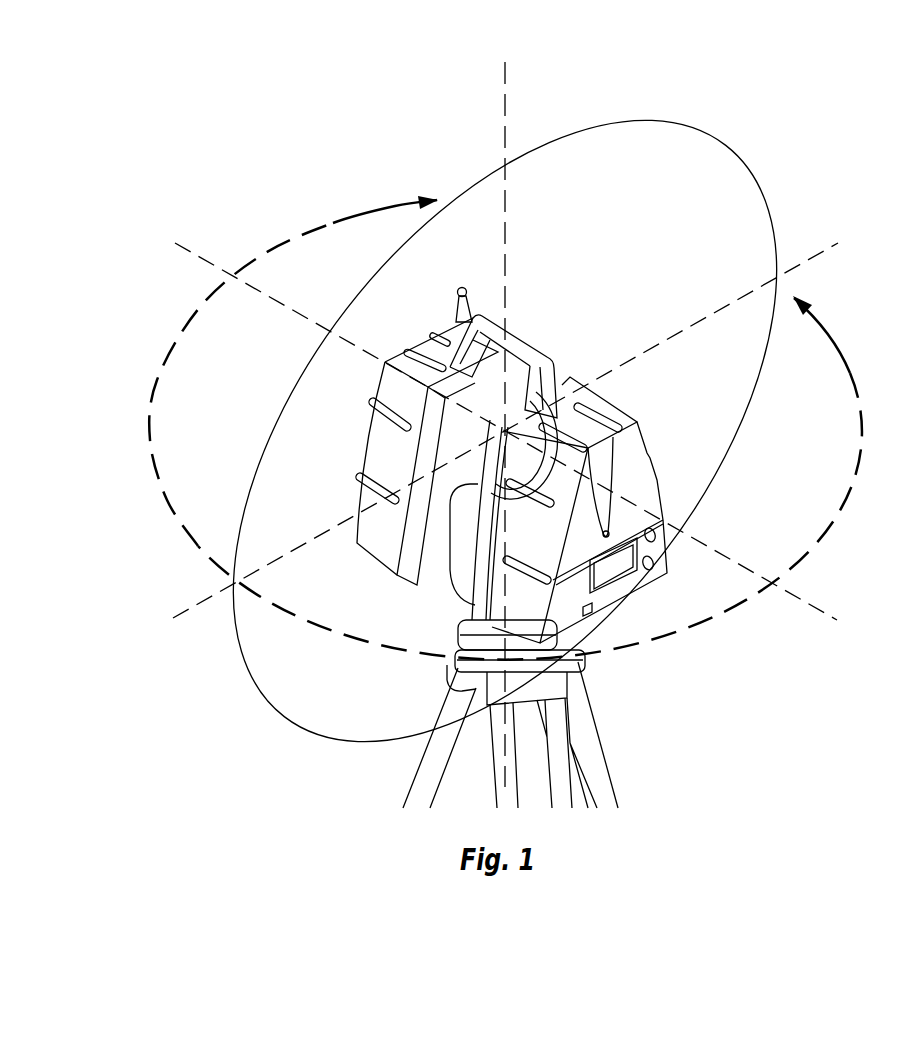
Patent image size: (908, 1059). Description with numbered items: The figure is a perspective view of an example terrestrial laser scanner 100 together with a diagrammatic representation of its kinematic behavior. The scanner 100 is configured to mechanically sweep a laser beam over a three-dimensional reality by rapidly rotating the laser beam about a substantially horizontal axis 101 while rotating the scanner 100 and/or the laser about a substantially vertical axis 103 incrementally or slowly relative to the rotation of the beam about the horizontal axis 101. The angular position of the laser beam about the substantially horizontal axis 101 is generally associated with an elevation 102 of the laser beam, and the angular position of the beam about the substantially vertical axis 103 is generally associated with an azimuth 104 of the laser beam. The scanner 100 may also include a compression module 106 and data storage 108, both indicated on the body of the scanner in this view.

The terrestrial laser scanner 100 is at (208, 118).
The substantially horizontal axis 101 is at (197, 255).
The elevation 102 is at (743, 158).
The substantially vertical axis 103 is at (504, 103).
The azimuth 104 is at (730, 610).
The compression module 106 is at (557, 628).
The data storage 108 is at (585, 613).